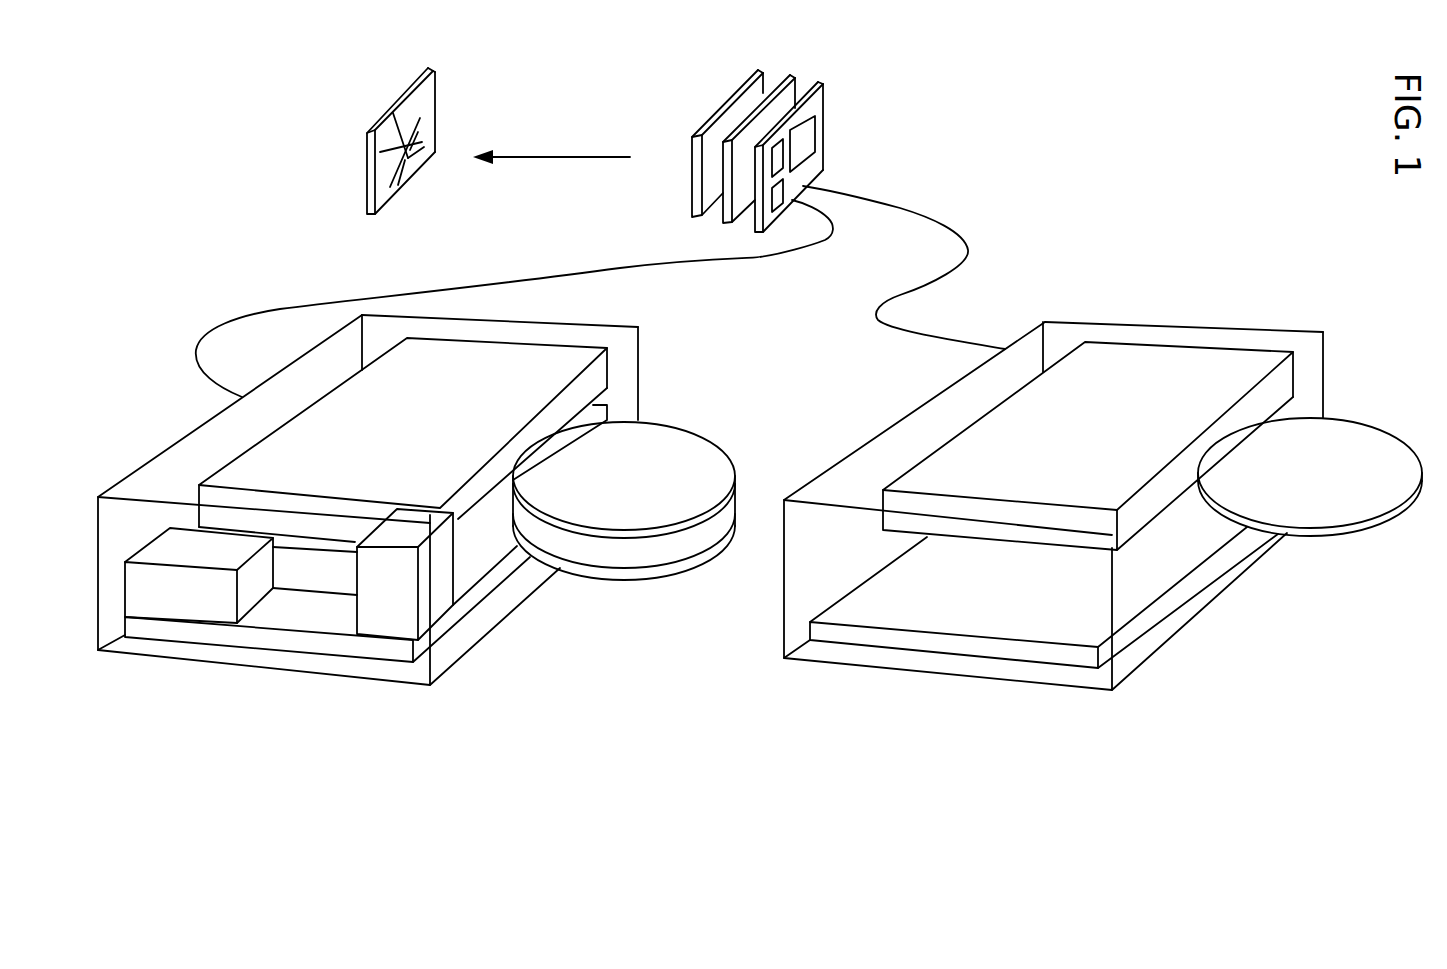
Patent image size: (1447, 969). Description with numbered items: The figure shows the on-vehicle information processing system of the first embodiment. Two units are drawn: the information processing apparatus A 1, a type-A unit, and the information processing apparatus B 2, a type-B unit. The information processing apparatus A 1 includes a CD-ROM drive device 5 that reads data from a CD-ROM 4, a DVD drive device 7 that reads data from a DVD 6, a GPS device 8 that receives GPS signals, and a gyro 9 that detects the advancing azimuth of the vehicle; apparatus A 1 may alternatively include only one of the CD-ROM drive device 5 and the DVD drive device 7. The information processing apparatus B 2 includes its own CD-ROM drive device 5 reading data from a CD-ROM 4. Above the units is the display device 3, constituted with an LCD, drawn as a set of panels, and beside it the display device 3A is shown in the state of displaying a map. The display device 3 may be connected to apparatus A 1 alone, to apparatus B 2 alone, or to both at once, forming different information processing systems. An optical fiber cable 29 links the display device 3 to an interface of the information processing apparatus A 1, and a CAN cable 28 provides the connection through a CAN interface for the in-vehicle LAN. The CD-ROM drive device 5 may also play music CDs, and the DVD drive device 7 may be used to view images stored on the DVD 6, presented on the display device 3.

The information processing apparatus A 1 is at (180, 428).
The information processing apparatus B 2 is at (1243, 303).
The display device 3 is at (683, 125).
The display device displaying a map 3A is at (368, 143).
The CD-ROM 4 is at (683, 457).
The CD-ROM drive device 5 is at (540, 372).
The DVD 6 is at (685, 547).
The DVD drive device 7 is at (473, 545).
The GPS device 8 is at (192, 603).
The gyro 9 is at (393, 605).
The CAN cable 28 is at (967, 250).
The optical fiber cable 29 is at (383, 298).